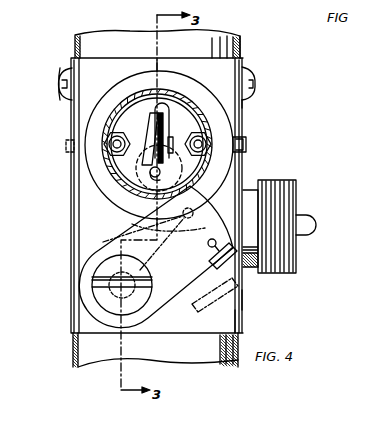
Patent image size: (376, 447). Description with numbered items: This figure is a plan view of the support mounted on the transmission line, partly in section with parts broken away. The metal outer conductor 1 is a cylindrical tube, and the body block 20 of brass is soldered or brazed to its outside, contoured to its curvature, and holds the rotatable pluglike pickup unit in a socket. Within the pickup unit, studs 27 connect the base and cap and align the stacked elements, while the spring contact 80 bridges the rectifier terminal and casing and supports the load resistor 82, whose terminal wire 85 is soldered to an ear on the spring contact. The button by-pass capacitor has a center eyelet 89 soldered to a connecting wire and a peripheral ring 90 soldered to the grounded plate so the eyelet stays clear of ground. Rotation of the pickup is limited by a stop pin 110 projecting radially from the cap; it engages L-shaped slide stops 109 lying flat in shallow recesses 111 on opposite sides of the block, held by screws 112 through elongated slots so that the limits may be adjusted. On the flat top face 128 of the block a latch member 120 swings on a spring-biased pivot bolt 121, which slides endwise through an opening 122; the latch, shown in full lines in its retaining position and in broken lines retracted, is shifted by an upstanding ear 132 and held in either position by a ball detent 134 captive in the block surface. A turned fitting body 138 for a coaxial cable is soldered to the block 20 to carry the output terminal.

The metal outer conductor 1 is at (239, 52).
The body block 20 is at (123, 63).
The studs 27 is at (116, 131).
The spring contact 80 is at (166, 97).
The load resistor 82 is at (121, 131).
The terminal wire 85 is at (168, 112).
The center eyelet 89 is at (190, 184).
The peripheral ring 90 is at (112, 173).
The slide stops 109 is at (243, 116).
The stop pin 110 is at (246, 145).
The recesses 111 is at (243, 106).
The screws 112 is at (242, 66).
The latch member 120 is at (173, 296).
The pivot bolt 121 is at (106, 259).
The opening 122 is at (132, 274).
The flat top face 128 is at (240, 320).
The upstanding ear 132 is at (242, 300).
The ball detent 134 is at (248, 283).
The fitting body 138 is at (250, 193).